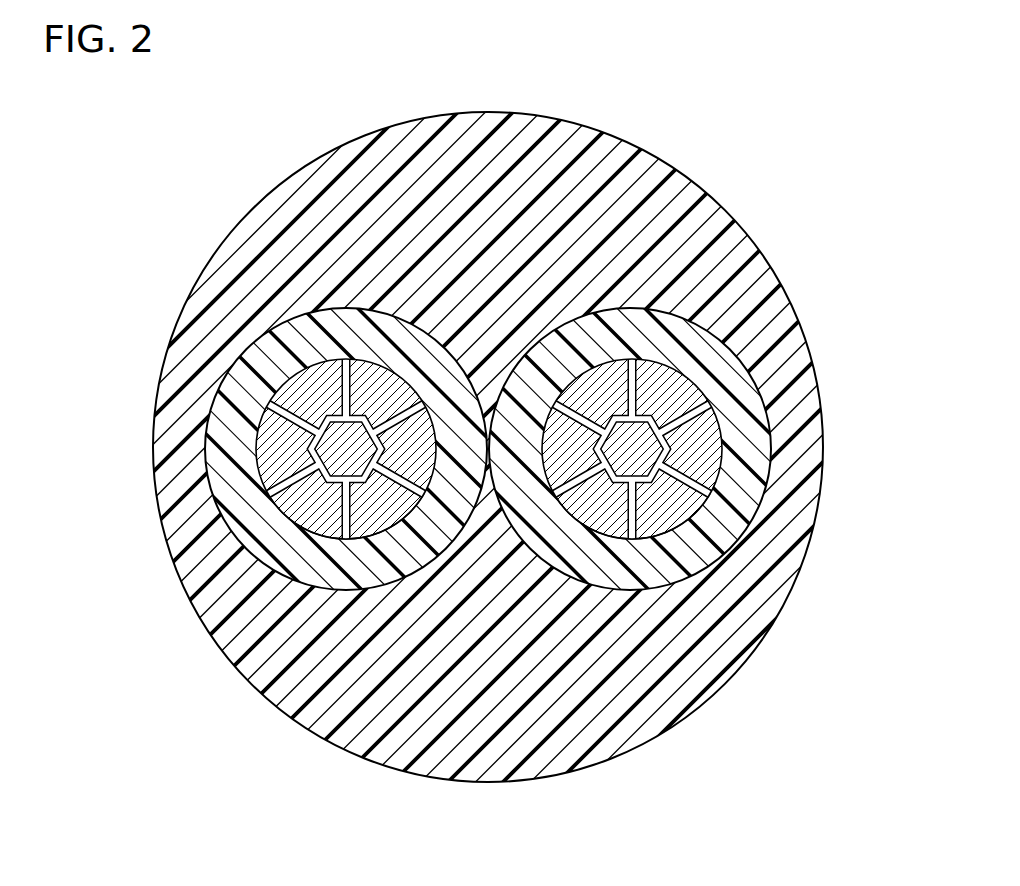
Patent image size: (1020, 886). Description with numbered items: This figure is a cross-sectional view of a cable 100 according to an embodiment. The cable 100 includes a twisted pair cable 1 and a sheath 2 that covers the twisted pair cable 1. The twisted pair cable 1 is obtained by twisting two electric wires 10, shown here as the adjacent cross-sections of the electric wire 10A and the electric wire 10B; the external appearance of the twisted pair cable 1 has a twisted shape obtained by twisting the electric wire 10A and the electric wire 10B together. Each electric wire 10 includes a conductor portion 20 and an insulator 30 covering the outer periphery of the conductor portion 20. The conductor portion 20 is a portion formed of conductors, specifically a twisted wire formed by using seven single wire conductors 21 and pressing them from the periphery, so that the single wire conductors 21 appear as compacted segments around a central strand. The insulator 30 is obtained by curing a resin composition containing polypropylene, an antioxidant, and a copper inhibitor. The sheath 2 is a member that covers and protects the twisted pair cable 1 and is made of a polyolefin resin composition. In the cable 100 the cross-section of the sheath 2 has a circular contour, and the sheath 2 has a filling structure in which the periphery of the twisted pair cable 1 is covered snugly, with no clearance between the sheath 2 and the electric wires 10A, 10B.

The cable 100 is at (752, 165).
The sheath 2 is at (742, 300).
The twisted pair cable 1 is at (383, 70).
The electric wire 10 is at (491, 458).
The electric wire 10A is at (386, 308).
The electric wire 10B is at (572, 322).
The conductor portion 20 is at (412, 800).
The single wire conductor 21 is at (338, 536).
The insulator 30 is at (428, 545).